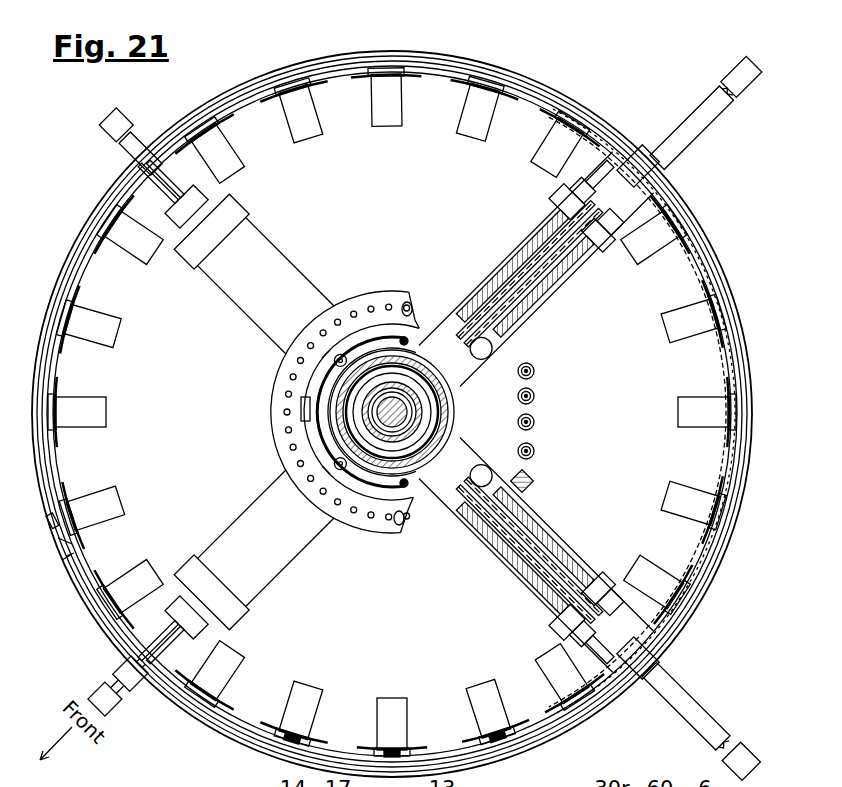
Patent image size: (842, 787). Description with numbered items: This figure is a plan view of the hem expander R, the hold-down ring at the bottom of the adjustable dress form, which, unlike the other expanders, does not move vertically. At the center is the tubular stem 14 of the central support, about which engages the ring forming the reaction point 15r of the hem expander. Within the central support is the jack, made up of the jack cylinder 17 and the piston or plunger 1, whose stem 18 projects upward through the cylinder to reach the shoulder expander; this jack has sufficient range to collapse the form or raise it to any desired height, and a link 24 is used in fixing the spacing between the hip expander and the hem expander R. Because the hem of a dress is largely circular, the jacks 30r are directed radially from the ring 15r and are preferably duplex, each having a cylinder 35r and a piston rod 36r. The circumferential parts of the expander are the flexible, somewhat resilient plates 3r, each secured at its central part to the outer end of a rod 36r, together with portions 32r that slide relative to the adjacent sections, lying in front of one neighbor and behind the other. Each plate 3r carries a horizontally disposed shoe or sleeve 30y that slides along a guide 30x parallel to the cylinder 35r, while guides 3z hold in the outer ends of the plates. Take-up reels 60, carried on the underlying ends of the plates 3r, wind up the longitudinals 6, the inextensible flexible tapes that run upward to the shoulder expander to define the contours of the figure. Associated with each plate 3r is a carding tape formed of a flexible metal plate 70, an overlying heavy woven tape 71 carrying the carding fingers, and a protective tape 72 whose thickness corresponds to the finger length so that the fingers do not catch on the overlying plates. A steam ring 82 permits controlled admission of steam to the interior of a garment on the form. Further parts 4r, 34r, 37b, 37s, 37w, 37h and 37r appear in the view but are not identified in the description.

The hem expander R is at (556, 90).
The plunger 1 is at (394, 408).
The plate 3r is at (622, 165).
The guide 3z is at (222, 108).
The guide rail 4r is at (560, 288).
The longitudinal 6 is at (395, 757).
The tubular stem 14 is at (345, 397).
The reaction point 15r is at (337, 421).
The jack cylinder 17 is at (398, 455).
The stem 18 is at (415, 410).
The link 24 is at (534, 481).
The jack 30r is at (278, 252).
The guide 30x is at (128, 668).
The shoe 30y is at (170, 196).
The slidable portion 32r is at (707, 538).
The slide bar 34r is at (477, 295).
The cylinder 35r is at (519, 250).
The piston rod 36r is at (608, 196).
The bolt 37b is at (535, 371).
The screw 37s is at (535, 396).
The washer 37w is at (535, 422).
The hex nut 37h is at (535, 451).
The retaining ring 37r is at (366, 506).
The take-up reel 60 is at (97, 418).
The flexible metal plate 70 is at (70, 558).
The woven tape 71 is at (72, 544).
The protective tape 72 is at (50, 522).
The steam ring 82 is at (313, 498).